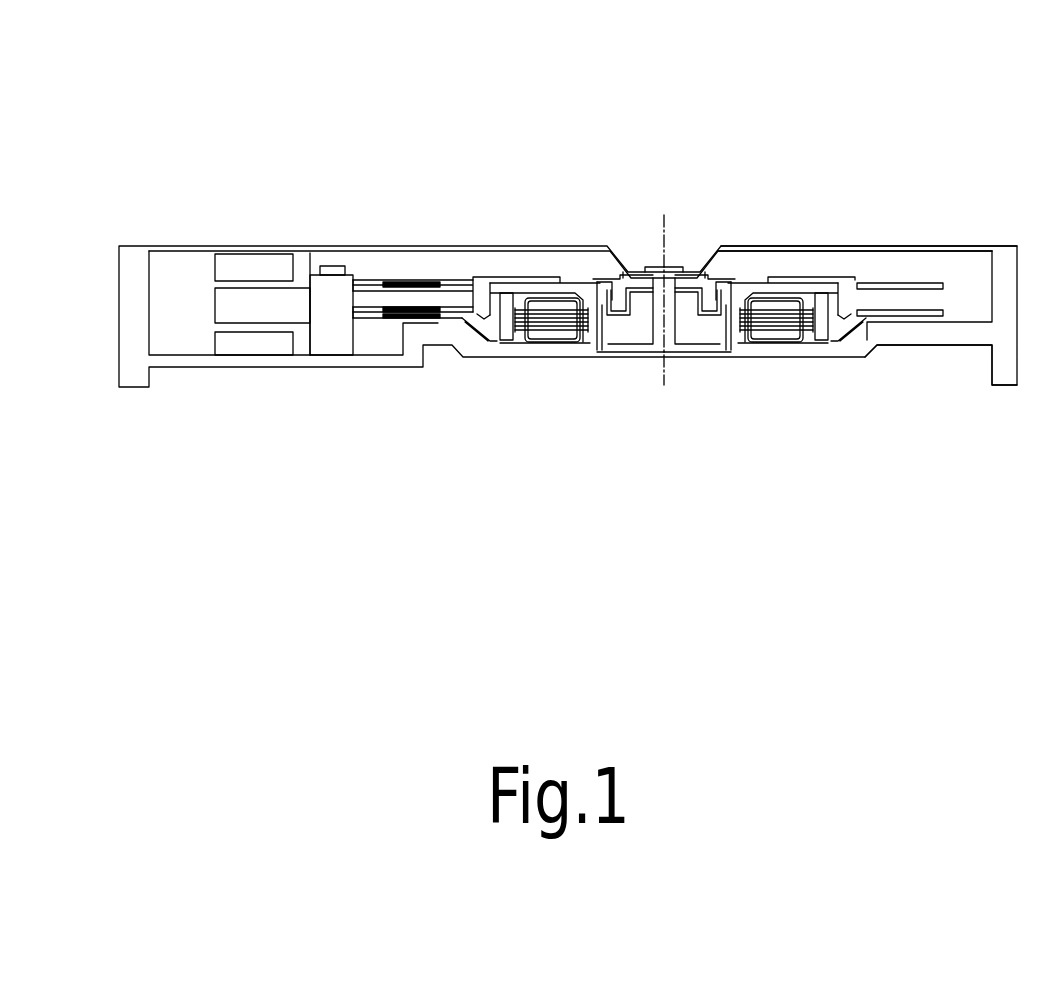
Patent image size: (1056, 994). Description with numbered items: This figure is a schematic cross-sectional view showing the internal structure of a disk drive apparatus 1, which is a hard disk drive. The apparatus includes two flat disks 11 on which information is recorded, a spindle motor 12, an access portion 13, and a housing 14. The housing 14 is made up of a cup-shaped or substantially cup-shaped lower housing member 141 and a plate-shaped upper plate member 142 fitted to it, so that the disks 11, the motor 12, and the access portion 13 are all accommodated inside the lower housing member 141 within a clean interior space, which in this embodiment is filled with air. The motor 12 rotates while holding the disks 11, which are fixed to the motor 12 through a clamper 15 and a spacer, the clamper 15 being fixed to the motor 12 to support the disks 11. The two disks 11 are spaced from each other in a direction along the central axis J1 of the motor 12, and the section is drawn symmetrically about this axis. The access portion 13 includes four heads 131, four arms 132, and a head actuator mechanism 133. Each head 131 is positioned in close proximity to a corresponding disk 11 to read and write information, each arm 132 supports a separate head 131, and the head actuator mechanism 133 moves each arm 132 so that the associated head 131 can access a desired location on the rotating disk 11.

The disk drive apparatus 1 is at (554, 276).
The disk 11 is at (875, 287).
The spindle motor 12 is at (618, 382).
The access portion 13 is at (427, 78).
The head 131 is at (428, 320).
The arm 132 is at (378, 282).
The head actuator mechanism 133 is at (328, 308).
The housing 14 is at (947, 147).
The lower housing member 141 is at (1003, 325).
The upper plate member 142 is at (953, 248).
The clamper 15 is at (485, 278).
The central axis J1 is at (663, 248).